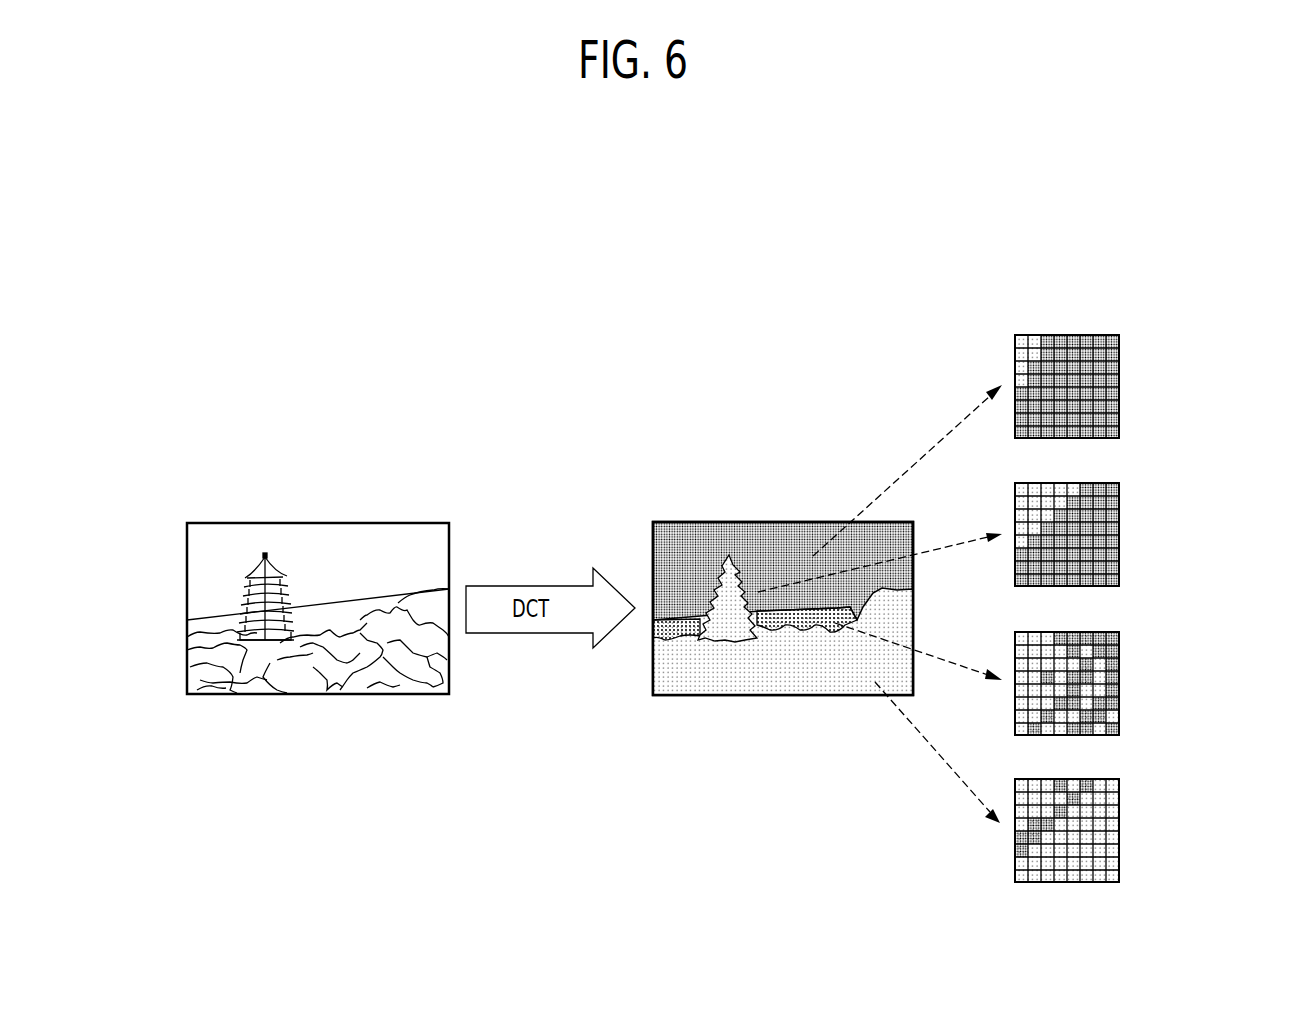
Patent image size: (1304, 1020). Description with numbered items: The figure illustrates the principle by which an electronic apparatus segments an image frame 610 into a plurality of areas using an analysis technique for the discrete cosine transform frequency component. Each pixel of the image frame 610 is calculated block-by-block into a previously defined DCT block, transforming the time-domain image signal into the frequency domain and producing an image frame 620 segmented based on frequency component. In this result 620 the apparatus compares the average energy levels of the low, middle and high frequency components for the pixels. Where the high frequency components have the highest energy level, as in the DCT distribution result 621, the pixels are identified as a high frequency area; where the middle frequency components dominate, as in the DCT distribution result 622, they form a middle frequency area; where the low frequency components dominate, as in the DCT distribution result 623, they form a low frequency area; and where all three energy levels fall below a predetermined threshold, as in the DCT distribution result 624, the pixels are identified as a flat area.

The image frame 610 is at (266, 504).
The image frame segmented based on a frequency component 620 is at (716, 504).
The DCT distribution result 621 is at (1146, 829).
The DCT distribution result 622 is at (1146, 680).
The DCT distribution result 623 is at (1146, 531).
The DCT distribution result 624 is at (1146, 383).